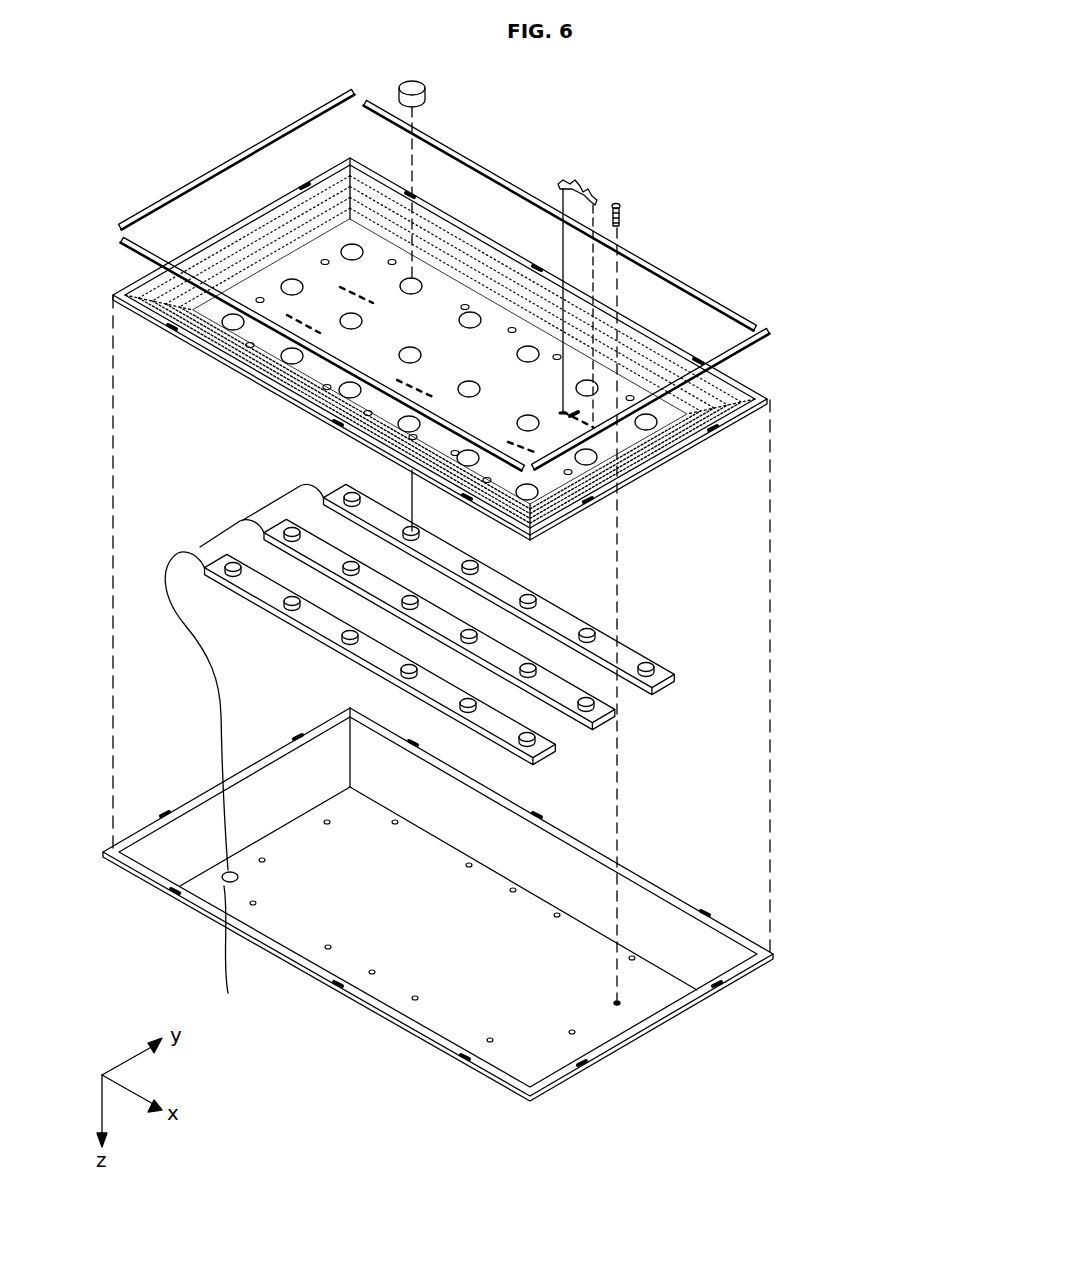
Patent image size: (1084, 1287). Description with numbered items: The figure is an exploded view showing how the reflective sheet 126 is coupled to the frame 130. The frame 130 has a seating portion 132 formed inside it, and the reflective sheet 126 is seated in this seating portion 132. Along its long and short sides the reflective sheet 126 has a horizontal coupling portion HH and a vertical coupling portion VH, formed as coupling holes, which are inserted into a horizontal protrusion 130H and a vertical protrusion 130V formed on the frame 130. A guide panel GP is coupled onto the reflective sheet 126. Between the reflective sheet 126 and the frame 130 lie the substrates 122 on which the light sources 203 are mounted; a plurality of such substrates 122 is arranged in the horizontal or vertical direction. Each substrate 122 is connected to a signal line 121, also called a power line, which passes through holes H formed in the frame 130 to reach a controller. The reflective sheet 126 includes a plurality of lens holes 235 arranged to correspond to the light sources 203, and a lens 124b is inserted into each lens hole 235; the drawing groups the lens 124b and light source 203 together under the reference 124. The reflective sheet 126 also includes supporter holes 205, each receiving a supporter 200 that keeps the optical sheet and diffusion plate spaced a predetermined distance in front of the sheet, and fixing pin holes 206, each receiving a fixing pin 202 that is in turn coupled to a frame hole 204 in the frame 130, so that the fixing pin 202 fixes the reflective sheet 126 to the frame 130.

The reflective sheet 126 is at (775, 366).
The lens hole 235 is at (292, 287).
The fixing pin hole 206 is at (657, 457).
The horizontal coupling portion HH is at (467, 507).
The vertical coupling portion VH is at (585, 508).
The supporter hole 205 is at (574, 414).
The guide panel GP is at (727, 302).
The supporter 200 is at (577, 185).
The fixing pin 202 is at (624, 211).
The substrate 122 is at (536, 534).
The light source unit 124 is at (557, 420).
The lens 124b is at (442, 92).
The light source 203 is at (656, 669).
The signal line 121 is at (217, 677).
The frame 130 is at (464, 925).
The seating portion 132 is at (435, 963).
The hole H is at (222, 878).
The horizontal protrusion 130H is at (465, 1060).
The vertical protrusion 130V is at (587, 1066).
The frame hole 204 is at (620, 1004).